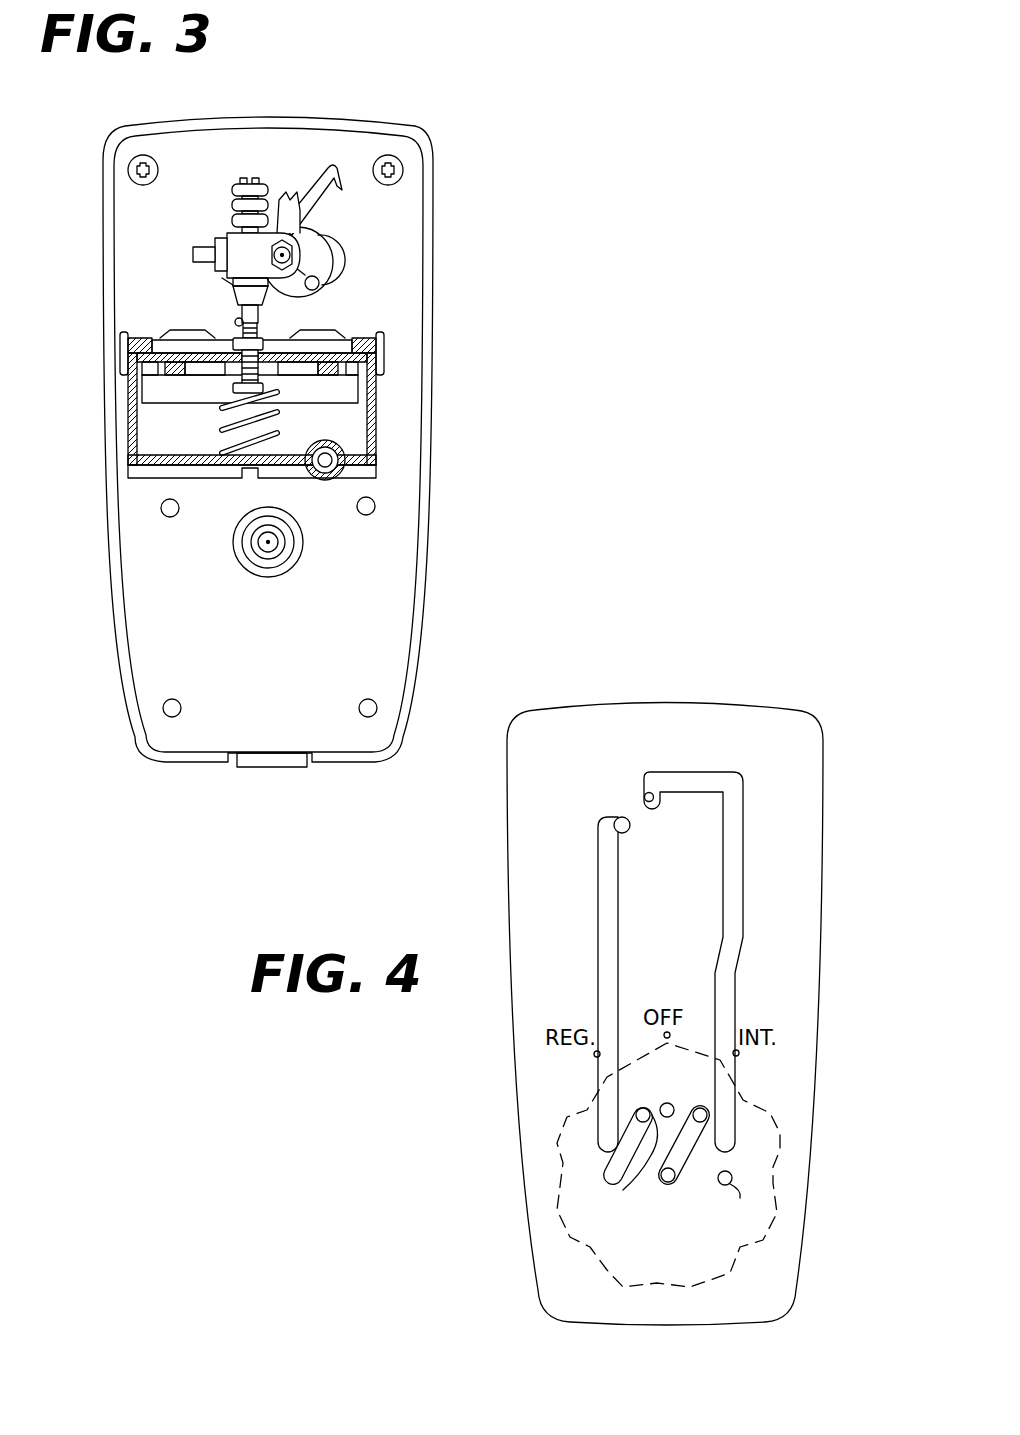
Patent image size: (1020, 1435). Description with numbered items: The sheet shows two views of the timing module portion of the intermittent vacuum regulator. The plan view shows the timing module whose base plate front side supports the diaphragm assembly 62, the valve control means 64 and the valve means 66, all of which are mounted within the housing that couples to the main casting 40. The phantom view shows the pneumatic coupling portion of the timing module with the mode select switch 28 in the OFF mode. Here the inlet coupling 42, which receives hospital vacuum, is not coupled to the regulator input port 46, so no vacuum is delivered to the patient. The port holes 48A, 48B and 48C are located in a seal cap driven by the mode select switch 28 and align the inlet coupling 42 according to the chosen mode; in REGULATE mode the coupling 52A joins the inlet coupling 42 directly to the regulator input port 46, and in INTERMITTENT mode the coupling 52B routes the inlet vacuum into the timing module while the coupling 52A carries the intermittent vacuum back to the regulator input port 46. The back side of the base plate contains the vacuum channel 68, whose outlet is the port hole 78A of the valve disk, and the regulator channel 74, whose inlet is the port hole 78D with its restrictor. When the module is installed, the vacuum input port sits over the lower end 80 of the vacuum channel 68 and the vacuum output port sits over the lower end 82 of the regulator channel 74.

In FIG. 4, the mode select switch 28 is at (773, 1170).
In FIG. 3, the main casting 40 is at (292, 550).
In FIG. 4, the inlet coupling 42 is at (660, 1106).
In FIG. 4, the regulator input port 46 is at (660, 1190).
In FIG. 4, the port hole 48A is at (611, 1169).
In FIG. 4, the port hole 48B is at (697, 1107).
In FIG. 4, the port hole 48C is at (739, 1203).
In FIG. 4, the coupling 52A is at (681, 1168).
In FIG. 4, the coupling 52B is at (603, 1168).
In FIG. 3, the diaphragm assembly 62 is at (386, 411).
In FIG. 3, the valve control means 64 is at (272, 175).
In FIG. 3, the valve means 66 is at (340, 254).
In FIG. 4, the vacuum channel 68 is at (598, 898).
In FIG. 4, the regulator channel 74 is at (740, 868).
In FIG. 4, the port hole 78A is at (612, 828).
In FIG. 4, the port hole 78D is at (648, 768).
In FIG. 4, the lower end of the vacuum channel 80 is at (600, 1149).
In FIG. 4, the lower end of the regulator channel 82 is at (735, 1147).